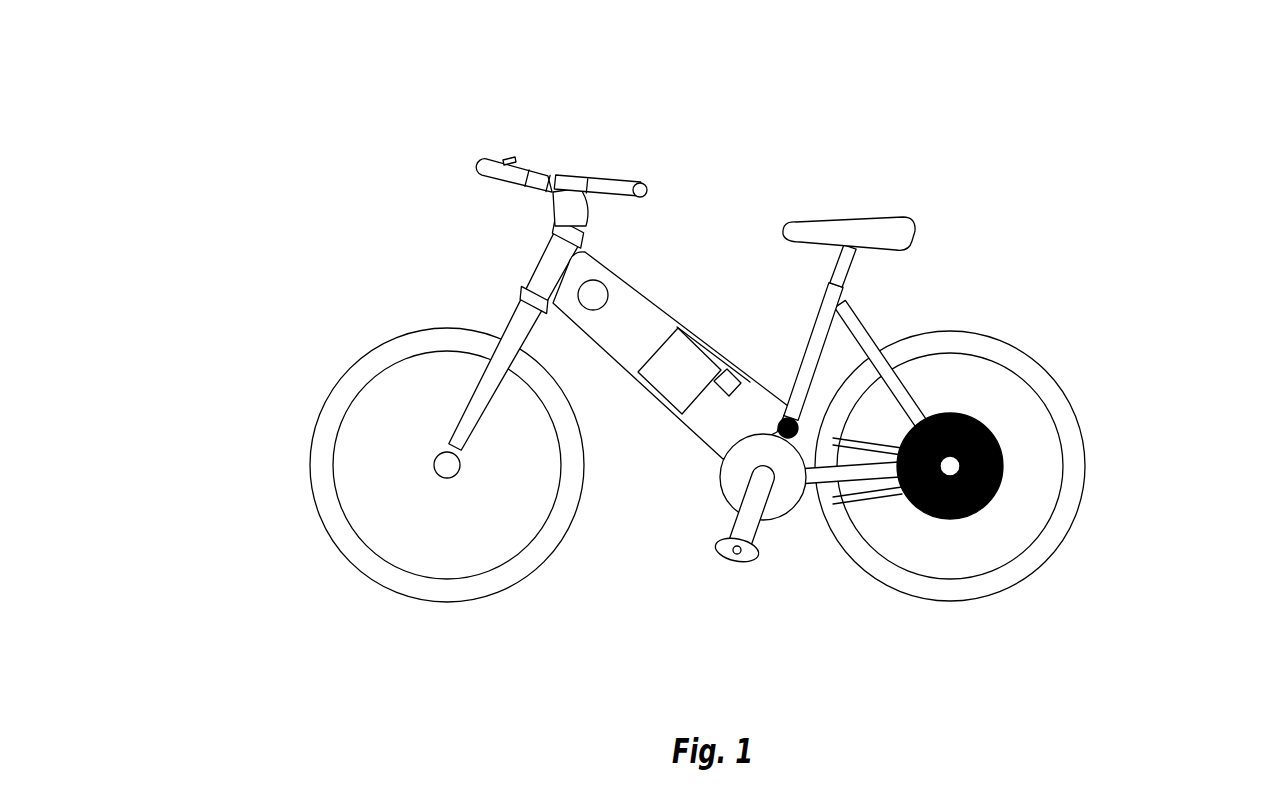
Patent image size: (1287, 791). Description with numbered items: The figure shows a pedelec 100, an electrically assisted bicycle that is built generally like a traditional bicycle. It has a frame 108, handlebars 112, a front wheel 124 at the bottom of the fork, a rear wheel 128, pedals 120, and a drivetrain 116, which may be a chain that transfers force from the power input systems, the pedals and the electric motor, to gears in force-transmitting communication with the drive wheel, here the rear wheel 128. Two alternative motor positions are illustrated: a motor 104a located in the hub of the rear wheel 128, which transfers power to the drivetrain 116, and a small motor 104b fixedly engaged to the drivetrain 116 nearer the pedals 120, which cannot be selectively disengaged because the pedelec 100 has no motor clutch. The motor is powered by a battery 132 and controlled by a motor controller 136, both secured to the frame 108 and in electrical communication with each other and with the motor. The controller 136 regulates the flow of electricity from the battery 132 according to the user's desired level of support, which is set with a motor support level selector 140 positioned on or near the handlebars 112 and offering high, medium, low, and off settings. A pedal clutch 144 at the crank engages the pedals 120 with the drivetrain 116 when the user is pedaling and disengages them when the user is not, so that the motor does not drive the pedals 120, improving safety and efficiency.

The pedelec 100 is at (699, 379).
The motor 104a is at (1003, 436).
The small motor 104b is at (803, 420).
The frame 108 is at (642, 282).
The handlebars 112 is at (478, 148).
The drivetrain 116 is at (816, 515).
The pedals 120 is at (720, 552).
The front wheel 124 is at (437, 602).
The rear wheel 128 is at (955, 602).
The battery 132 is at (685, 352).
The motor controller 136 is at (737, 377).
The motor support level selector 140 is at (512, 150).
The pedal clutch 144 is at (718, 475).